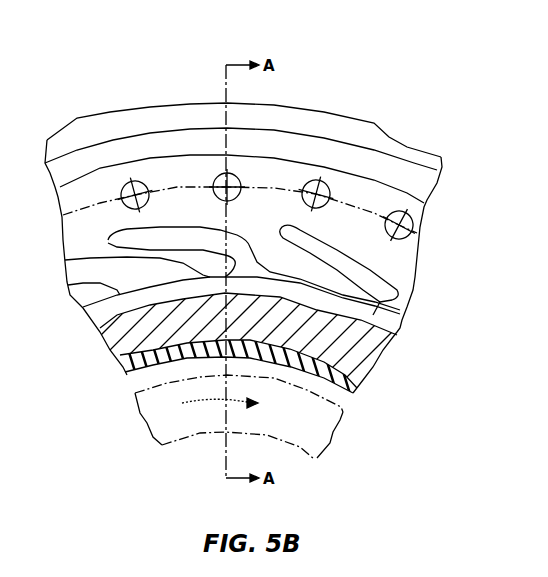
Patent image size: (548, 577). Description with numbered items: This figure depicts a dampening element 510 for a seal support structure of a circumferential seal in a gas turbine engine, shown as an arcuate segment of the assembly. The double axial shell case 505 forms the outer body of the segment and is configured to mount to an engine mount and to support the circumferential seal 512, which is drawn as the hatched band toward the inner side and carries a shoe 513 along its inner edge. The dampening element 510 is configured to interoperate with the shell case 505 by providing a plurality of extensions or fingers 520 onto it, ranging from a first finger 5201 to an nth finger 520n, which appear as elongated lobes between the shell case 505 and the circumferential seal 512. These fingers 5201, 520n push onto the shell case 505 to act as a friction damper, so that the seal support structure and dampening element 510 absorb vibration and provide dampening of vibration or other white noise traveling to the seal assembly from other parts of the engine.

The double axial shell case 505 is at (88, 162).
The dampening element 510 is at (412, 212).
The fingers 520 is at (245, 273).
The first finger 5201 is at (108, 243).
The nth finger 520n is at (400, 297).
The circumferential seal 512 is at (100, 340).
The shoe 513 is at (133, 370).